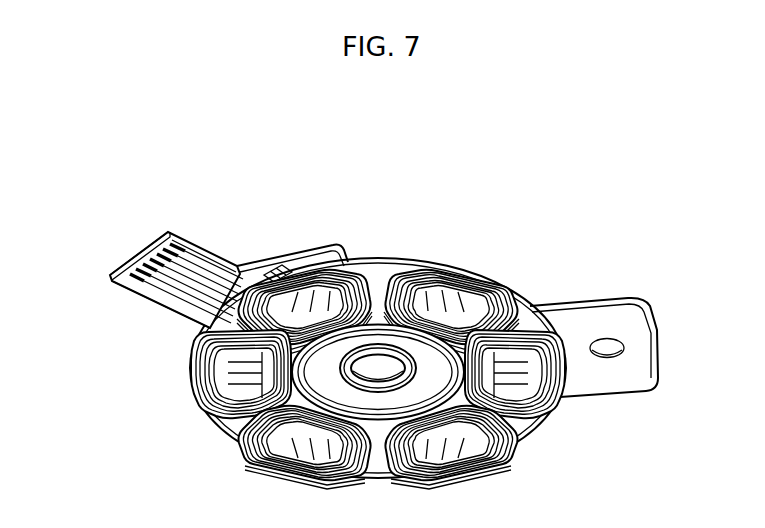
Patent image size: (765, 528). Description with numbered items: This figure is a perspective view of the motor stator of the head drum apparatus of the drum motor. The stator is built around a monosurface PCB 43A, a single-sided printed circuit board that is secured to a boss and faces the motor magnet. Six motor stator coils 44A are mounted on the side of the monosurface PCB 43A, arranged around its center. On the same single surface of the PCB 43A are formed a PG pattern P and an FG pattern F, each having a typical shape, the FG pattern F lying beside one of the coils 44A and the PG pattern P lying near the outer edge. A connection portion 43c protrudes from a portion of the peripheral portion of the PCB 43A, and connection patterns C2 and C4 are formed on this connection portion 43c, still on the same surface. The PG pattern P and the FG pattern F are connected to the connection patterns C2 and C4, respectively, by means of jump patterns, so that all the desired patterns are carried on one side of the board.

The monosurface PCB 43A is at (430, 263).
The motor stator coils 44A is at (490, 296).
The connection portion 43c is at (148, 263).
The PG pattern P is at (293, 266).
The connection pattern C2 is at (168, 250).
The connection pattern C4 is at (158, 258).
The FG pattern F is at (190, 393).